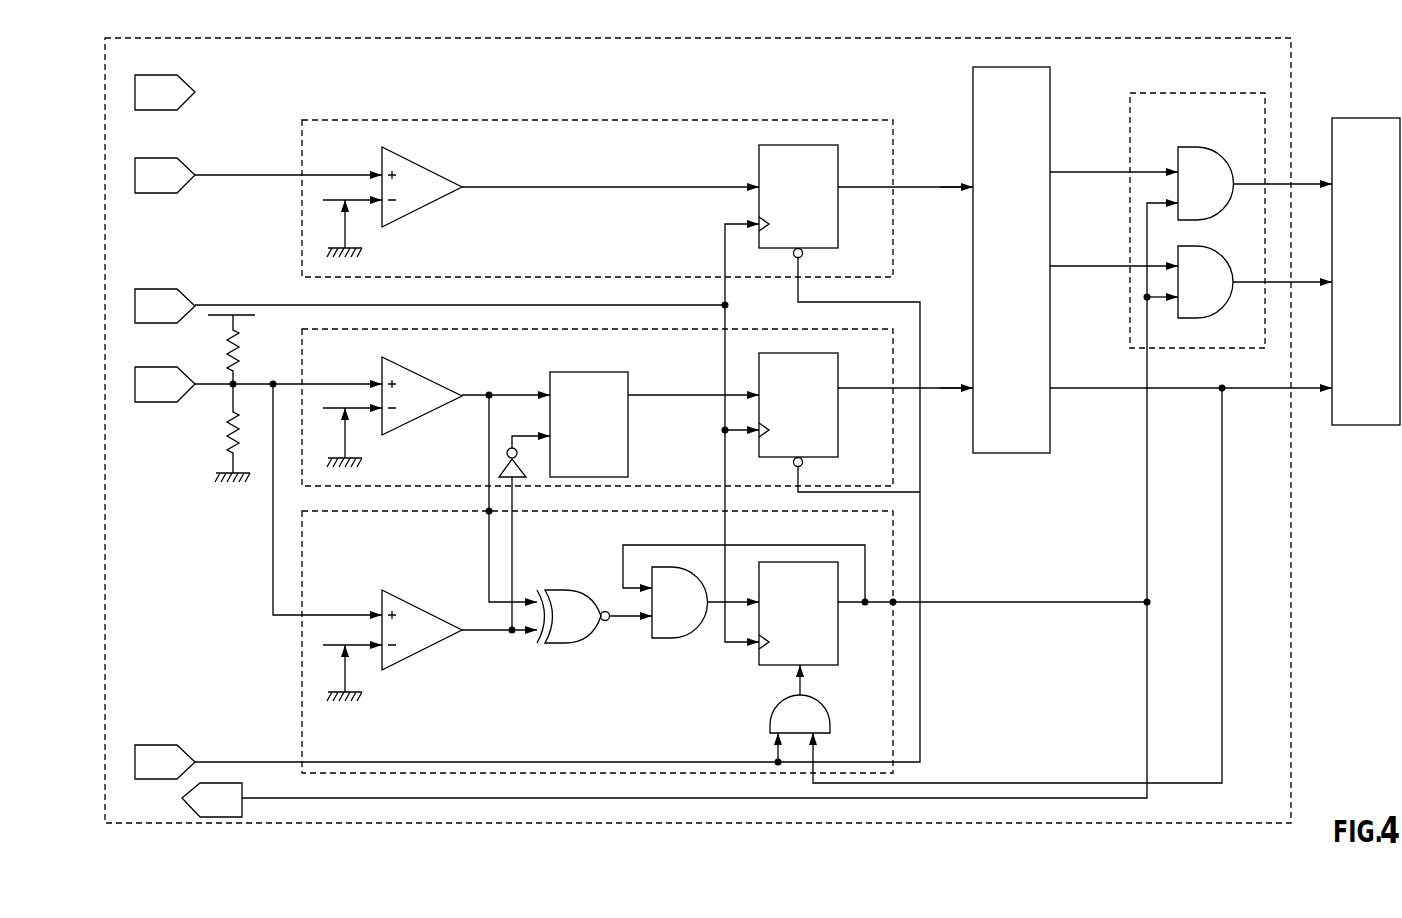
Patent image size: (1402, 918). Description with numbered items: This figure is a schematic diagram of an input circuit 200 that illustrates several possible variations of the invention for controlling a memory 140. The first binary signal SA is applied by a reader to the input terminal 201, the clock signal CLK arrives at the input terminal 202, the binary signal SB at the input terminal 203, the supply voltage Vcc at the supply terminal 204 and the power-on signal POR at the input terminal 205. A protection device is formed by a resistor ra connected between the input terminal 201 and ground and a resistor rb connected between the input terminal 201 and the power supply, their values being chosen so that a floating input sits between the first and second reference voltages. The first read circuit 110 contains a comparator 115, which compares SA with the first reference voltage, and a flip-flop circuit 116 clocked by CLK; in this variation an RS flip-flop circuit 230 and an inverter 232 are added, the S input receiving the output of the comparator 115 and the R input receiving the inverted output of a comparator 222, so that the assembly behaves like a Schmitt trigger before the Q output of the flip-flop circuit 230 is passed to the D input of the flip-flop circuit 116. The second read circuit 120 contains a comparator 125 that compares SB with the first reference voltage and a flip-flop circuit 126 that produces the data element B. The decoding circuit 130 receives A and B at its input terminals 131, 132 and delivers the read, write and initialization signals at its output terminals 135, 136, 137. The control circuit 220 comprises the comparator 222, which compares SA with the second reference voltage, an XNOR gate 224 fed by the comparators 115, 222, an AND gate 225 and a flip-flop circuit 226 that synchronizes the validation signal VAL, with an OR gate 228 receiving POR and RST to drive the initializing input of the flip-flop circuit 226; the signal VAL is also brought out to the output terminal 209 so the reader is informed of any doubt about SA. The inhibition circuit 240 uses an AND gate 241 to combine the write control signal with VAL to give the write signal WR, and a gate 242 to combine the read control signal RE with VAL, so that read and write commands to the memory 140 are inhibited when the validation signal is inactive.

The input circuit 200 is at (1291, 697).
The input terminal 201 is at (165, 402).
The input terminal 202 is at (165, 289).
The input terminal 203 is at (185, 160).
The supply terminal 204 is at (185, 77).
The input terminal 205 is at (168, 745).
The output terminal 209 is at (232, 783).
The first read circuit 110 is at (302, 480).
The comparator 115 is at (418, 420).
The flip-flop circuit 116 is at (838, 404).
The second read circuit 120 is at (302, 221).
The comparator 125 is at (418, 210).
The flip-flop circuit 126 is at (759, 160).
The decoding circuit 130 is at (1050, 88).
The input terminal 131 is at (972, 386).
The input terminal 132 is at (972, 186).
The output terminal 135 is at (1052, 172).
The output terminal 136 is at (1052, 266).
The output terminal 137 is at (1052, 388).
The memory 140 is at (1367, 118).
The control circuit 220 is at (302, 690).
The comparator 222 is at (424, 660).
The logic gate 224 is at (570, 644).
The logic gate 225 is at (677, 640).
The flip-flop circuit 226 is at (838, 665).
The logic gate 228 is at (770, 722).
The flip-flop circuit 230 is at (630, 378).
The inverter 232 is at (503, 462).
The inhibition circuit 240 is at (1215, 93).
The logic gate 241 is at (1210, 246).
The logic gate 242 is at (1210, 147).